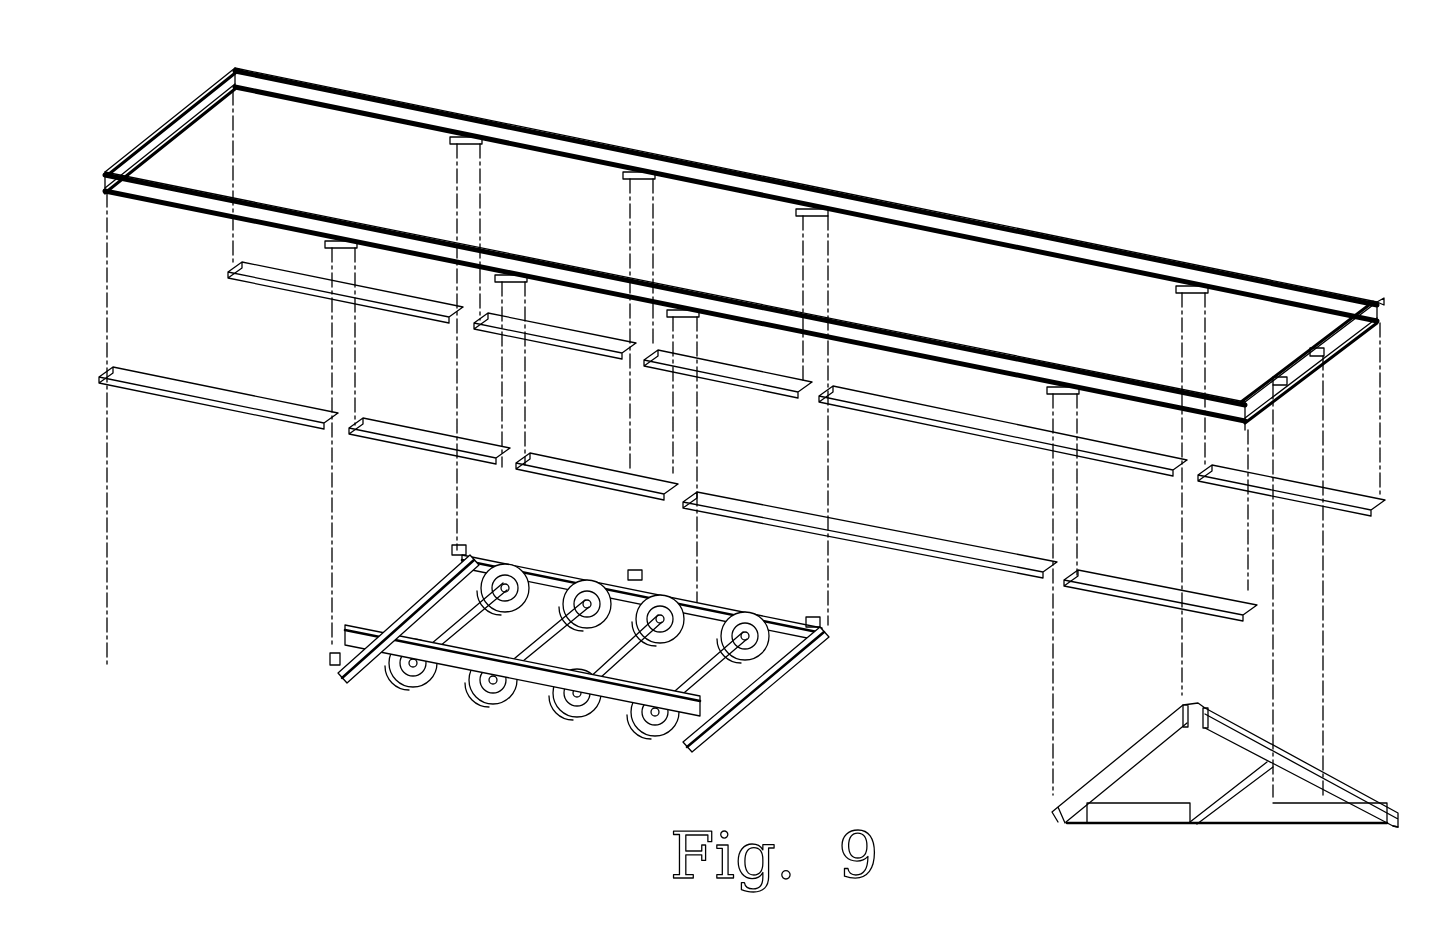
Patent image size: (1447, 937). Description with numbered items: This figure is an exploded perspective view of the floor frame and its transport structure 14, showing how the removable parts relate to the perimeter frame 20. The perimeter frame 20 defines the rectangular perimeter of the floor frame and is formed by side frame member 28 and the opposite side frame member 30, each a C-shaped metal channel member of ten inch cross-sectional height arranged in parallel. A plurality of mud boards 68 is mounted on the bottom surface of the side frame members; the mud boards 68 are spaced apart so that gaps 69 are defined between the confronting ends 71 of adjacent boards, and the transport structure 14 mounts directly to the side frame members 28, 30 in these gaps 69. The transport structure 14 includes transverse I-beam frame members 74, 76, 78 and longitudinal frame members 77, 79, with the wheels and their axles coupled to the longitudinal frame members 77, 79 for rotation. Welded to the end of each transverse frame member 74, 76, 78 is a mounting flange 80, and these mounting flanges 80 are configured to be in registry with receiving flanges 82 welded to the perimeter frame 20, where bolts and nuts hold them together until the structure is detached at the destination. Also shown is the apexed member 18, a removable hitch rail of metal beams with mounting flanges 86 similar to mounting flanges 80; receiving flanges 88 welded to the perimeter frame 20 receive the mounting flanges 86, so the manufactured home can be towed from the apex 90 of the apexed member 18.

The transport structure 14 is at (594, 652).
The apexed member 18 is at (1246, 736).
The perimeter frame 20 is at (744, 249).
The side frame member 28 is at (1062, 242).
The opposite side frame member 30 is at (905, 335).
The mud boards 68 is at (277, 288).
The gaps 69 is at (468, 336).
The confronting ends 71 is at (455, 321).
The transverse I-beam frame member 74 is at (765, 700).
The transverse I-beam frame member 76 is at (562, 722).
The longitudinal frame member 77 is at (718, 625).
The transverse I-beam frame member 78 is at (425, 585).
The longitudinal frame member 79 is at (452, 676).
The mounting flanges 80 is at (581, 652).
The receiving flanges 82 is at (472, 136).
The mounting flanges 86 is at (1190, 703).
The receiving flanges 88 is at (1194, 285).
The apex 90 is at (1398, 812).